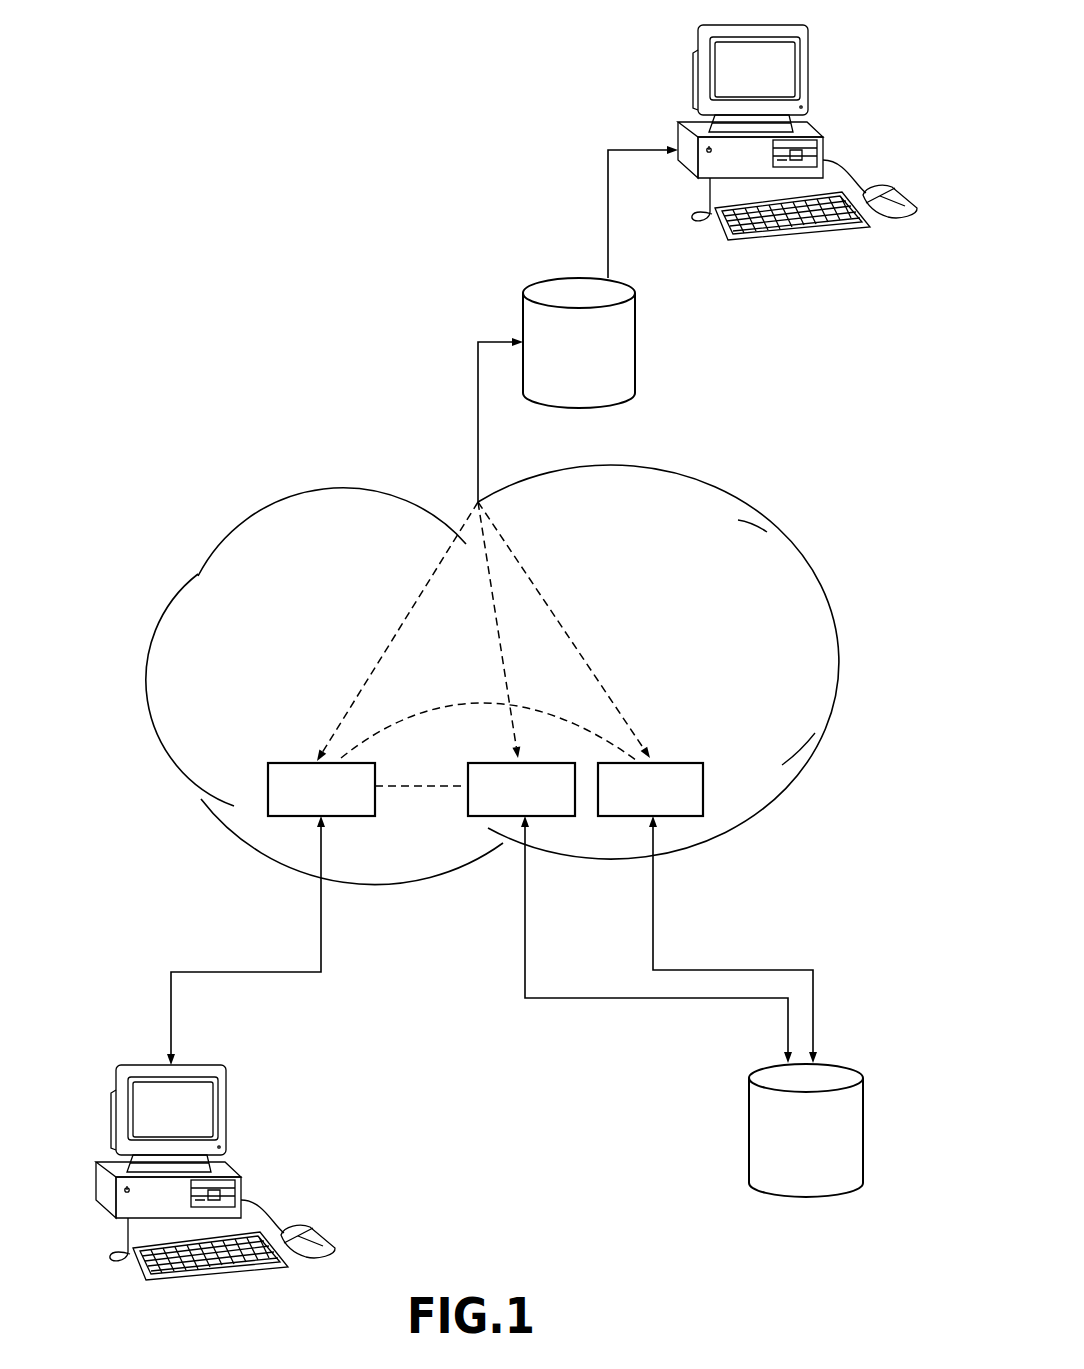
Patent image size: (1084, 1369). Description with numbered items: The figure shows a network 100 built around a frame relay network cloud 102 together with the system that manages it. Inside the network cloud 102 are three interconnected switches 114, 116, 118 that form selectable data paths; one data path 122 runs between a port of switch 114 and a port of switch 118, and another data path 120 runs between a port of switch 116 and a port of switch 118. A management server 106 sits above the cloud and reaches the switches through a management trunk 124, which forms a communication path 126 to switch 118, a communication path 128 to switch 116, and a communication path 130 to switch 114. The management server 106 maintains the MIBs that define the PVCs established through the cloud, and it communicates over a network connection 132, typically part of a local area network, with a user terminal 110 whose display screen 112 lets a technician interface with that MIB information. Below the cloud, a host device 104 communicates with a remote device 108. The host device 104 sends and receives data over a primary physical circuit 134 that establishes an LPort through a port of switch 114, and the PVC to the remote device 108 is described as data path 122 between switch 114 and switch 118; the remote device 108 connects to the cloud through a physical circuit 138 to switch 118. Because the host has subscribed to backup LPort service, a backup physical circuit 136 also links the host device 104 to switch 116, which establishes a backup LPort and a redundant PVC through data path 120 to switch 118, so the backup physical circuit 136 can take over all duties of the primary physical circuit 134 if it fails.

The network 100 is at (191, 73).
The network cloud 102 is at (673, 482).
The host device 104 is at (847, 1067).
The management server 106 is at (567, 280).
The remote device 108 is at (237, 1165).
The user terminal 110 is at (770, 138).
The display screen 112 is at (797, 25).
The switch 114 is at (675, 760).
The switch 116 is at (498, 761).
The switch 118 is at (298, 761).
The data path 120 is at (455, 786).
The data path 122 is at (457, 704).
The management trunk 124 is at (478, 415).
The communication path 126 is at (409, 619).
The communication path 128 is at (507, 675).
The communication path 130 is at (538, 587).
The network connection 132 is at (607, 205).
The primary physical circuit 134 is at (727, 967).
The backup physical circuit 136 is at (571, 997).
The physical circuit 138 is at (247, 968).